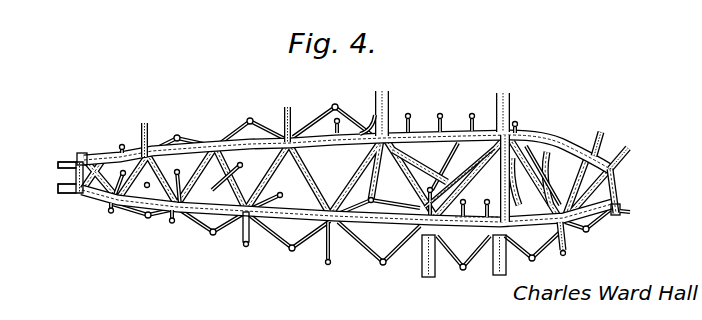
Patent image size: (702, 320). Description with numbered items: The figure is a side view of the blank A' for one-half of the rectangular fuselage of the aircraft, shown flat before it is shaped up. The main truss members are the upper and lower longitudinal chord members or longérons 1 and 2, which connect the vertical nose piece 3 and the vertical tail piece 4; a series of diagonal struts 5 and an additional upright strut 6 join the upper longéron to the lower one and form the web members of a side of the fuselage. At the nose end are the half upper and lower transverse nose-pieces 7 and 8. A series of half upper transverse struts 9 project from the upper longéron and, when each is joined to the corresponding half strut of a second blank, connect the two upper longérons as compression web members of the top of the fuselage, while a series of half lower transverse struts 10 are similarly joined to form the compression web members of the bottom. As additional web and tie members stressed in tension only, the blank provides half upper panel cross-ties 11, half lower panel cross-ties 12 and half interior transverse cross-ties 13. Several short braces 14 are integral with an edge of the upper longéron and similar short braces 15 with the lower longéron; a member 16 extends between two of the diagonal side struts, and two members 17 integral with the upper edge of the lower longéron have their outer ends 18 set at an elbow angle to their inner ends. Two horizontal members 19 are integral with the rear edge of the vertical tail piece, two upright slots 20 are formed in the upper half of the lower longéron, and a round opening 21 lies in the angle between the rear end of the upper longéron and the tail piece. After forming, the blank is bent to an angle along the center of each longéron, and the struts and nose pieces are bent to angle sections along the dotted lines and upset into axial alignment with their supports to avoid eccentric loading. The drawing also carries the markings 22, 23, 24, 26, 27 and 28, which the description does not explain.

The upper longitudinal chord member 1 is at (527, 158).
The lower longitudinal chord member 2 is at (317, 224).
The vertical nose piece 3 is at (617, 182).
The vertical tail piece 4 is at (67, 180).
The diagonal struts 5 is at (170, 152).
The upright strut 6 is at (473, 212).
The half upper transverse nose-piece 7 is at (627, 153).
The half lower transverse nose-piece 8 is at (630, 213).
The half upper transverse struts 9 is at (101, 152).
The half lower transverse struts 10 is at (87, 197).
The half upper panel cross-ties 11 is at (163, 138).
The half lower panel cross-ties 12 is at (138, 213).
The half interior transverse cross-ties 13 is at (226, 182).
The short braces 14 is at (439, 116).
The short braces 15 is at (460, 200).
The member 16 is at (435, 176).
The members 17 is at (528, 260).
The outer ends 18 is at (550, 163).
The horizontal members 19 is at (75, 160).
The upright slots 20 is at (420, 278).
The round opening 21 is at (85, 153).
The upright posts 22 is at (387, 92).
The lower posts 23 is at (245, 246).
The end fitting 24 is at (624, 150).
The upper pin joints 26 is at (179, 135).
The lower pin joints 27 is at (212, 235).
The inner pin joints 28 is at (243, 166).